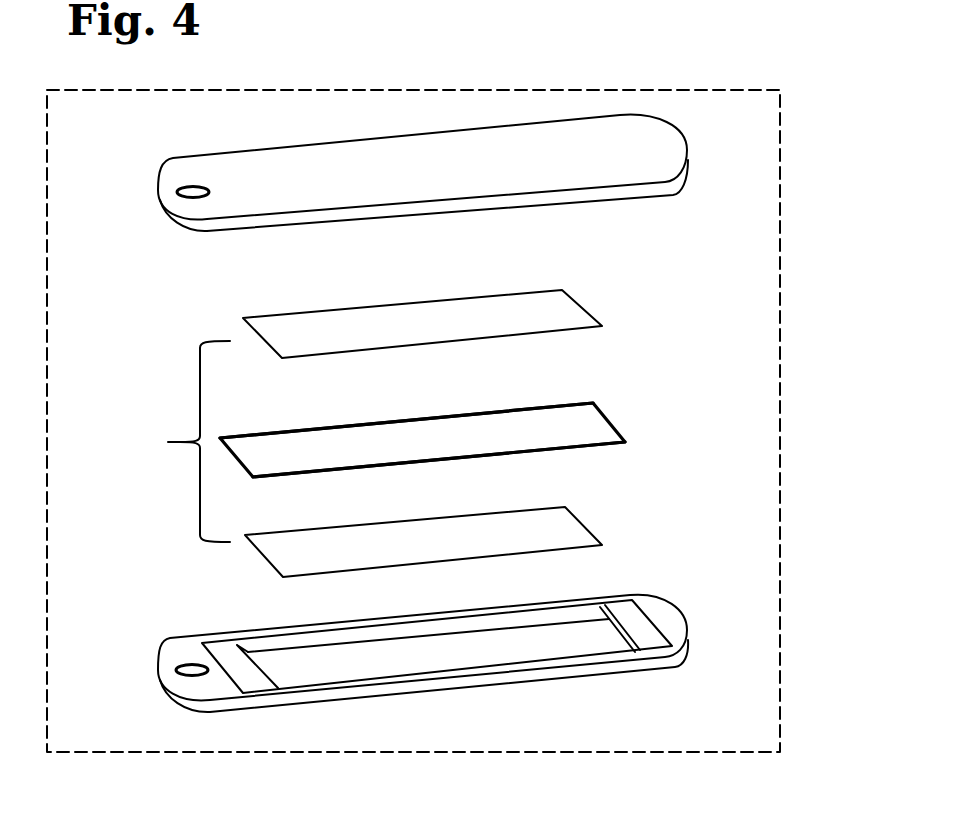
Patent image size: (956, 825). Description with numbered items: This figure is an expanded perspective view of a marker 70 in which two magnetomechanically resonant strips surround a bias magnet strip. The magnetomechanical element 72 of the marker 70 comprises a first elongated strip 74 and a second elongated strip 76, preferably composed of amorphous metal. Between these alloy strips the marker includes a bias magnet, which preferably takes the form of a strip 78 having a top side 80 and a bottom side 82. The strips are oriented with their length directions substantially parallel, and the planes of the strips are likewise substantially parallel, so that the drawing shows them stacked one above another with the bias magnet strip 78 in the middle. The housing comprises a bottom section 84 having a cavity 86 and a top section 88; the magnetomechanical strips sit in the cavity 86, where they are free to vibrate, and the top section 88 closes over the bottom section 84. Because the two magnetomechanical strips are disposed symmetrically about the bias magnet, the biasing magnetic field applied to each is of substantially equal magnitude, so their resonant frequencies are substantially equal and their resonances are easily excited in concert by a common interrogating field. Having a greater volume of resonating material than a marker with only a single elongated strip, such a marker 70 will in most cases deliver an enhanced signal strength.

The marker 70 is at (780, 188).
The magnetomechanical element 72 is at (167, 441).
The first elongated strip 74 is at (552, 533).
The second elongated strip 76 is at (532, 312).
The bias magnet strip 78 is at (608, 418).
The top side 80 is at (523, 427).
The bottom side 82 is at (542, 450).
The bottom section 84 is at (585, 670).
The cavity 86 is at (355, 665).
The top section 88 is at (278, 178).